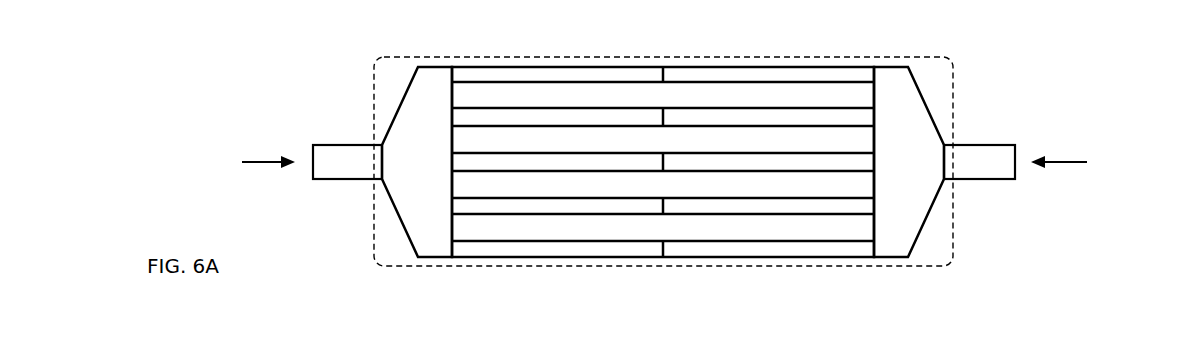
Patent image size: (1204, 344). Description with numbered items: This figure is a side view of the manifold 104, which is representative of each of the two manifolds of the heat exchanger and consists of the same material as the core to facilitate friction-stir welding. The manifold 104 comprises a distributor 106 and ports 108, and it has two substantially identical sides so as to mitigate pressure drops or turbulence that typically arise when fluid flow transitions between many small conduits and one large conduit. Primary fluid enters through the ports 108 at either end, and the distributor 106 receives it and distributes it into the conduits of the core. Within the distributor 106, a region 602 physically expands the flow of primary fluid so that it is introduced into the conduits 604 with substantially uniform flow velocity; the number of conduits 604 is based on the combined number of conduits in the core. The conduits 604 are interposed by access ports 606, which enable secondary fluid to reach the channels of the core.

The manifold 104 is at (289, 44).
The distributor 106 is at (918, 268).
The ports 108 is at (338, 170).
The region 602 is at (437, 73).
The conduits 604 is at (593, 248).
The access ports 606 is at (690, 95).